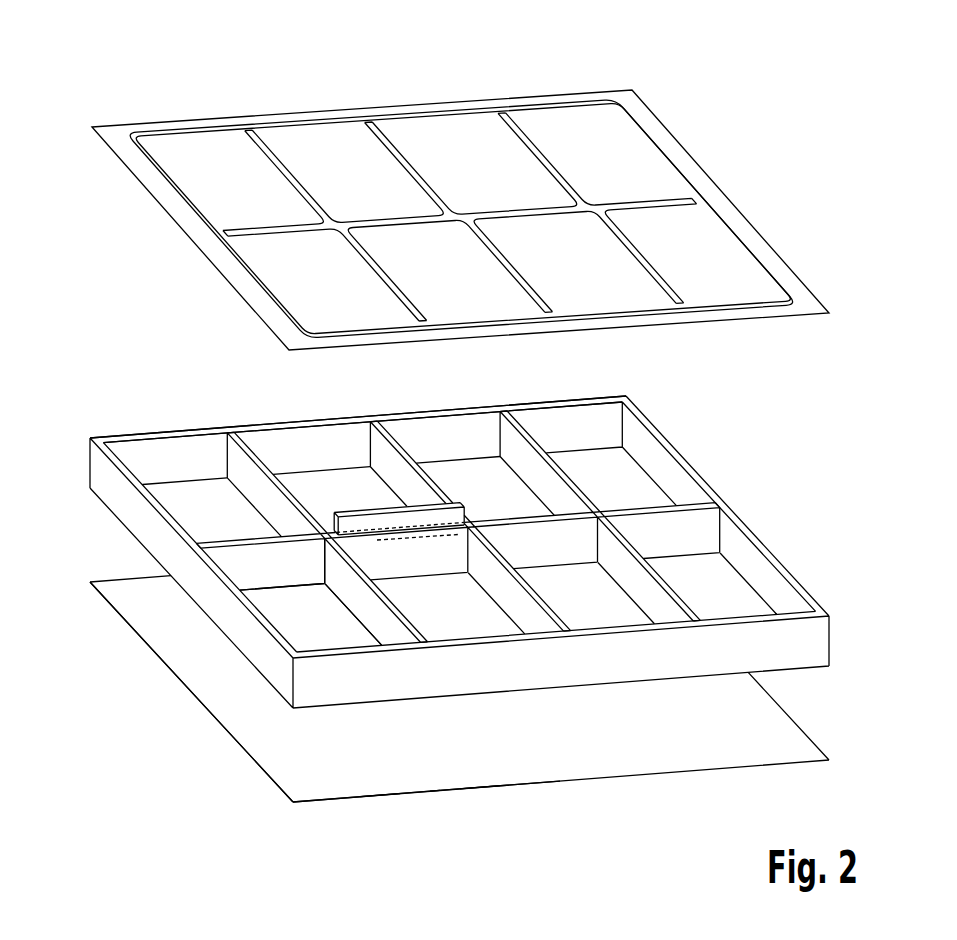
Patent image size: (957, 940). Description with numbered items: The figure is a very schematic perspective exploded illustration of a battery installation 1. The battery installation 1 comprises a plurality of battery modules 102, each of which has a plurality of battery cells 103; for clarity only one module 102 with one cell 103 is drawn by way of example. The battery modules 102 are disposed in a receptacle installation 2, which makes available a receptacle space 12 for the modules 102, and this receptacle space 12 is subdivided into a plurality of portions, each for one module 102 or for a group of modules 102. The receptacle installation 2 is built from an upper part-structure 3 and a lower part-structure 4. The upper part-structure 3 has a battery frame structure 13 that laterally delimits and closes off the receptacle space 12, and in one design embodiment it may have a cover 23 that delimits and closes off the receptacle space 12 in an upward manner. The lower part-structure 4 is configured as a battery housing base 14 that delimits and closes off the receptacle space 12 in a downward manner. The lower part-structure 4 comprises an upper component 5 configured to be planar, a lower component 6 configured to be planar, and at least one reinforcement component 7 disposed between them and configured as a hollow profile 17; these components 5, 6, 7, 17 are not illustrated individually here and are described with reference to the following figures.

The battery installation 1 is at (217, 85).
The receptacle installation 2 is at (740, 447).
The upper part-structure 3 is at (133, 408).
The lower part-structure 4 is at (168, 682).
The upper component 5 is at (335, 805).
The lower component 6 is at (398, 803).
The reinforcement component 7 is at (462, 797).
The receptacle space 12 is at (302, 618).
The battery frame structure 13 is at (197, 428).
The battery housing base 14 is at (237, 742).
The hollow profile 17 is at (483, 797).
The cover 23 is at (186, 236).
The battery module 102 is at (358, 513).
The battery cell 103 is at (430, 518).